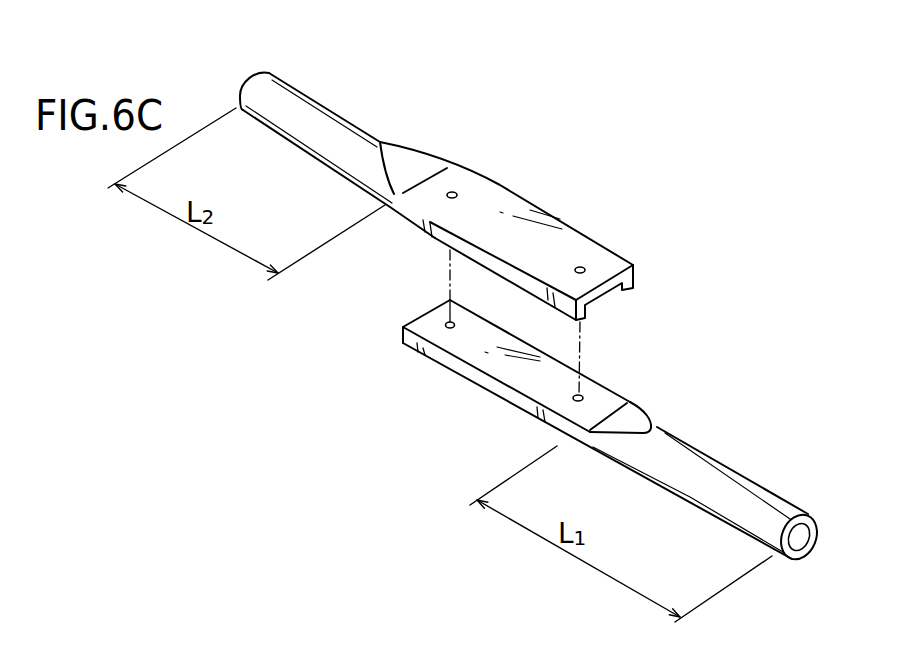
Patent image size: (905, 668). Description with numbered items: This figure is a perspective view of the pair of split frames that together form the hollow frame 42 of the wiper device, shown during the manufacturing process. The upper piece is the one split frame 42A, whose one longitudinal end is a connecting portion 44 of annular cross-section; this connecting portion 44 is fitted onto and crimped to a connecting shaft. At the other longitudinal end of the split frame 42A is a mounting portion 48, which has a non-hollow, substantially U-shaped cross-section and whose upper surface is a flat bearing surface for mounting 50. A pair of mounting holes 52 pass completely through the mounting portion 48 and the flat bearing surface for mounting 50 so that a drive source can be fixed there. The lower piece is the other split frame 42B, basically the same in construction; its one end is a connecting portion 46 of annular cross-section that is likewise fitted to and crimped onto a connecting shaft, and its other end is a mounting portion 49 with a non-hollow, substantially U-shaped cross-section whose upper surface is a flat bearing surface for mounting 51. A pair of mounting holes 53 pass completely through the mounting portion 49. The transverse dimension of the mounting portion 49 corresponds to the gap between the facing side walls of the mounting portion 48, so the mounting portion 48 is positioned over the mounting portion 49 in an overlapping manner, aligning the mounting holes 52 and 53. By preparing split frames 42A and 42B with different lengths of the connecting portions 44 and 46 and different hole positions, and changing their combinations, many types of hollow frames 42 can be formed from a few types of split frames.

The hollow frame 42 is at (634, 205).
The split frame 42A is at (332, 128).
The split frame 42B is at (693, 470).
The connecting portion 44 is at (260, 92).
The connecting portion 46 is at (755, 535).
The mounting portion 48 is at (437, 243).
The mounting portion 49 is at (488, 400).
The flat bearing surface for mounting 50 is at (495, 205).
The flat bearing surface for mounting 51 is at (482, 354).
The mounting holes 52 is at (455, 190).
The mounting holes 53 is at (446, 327).